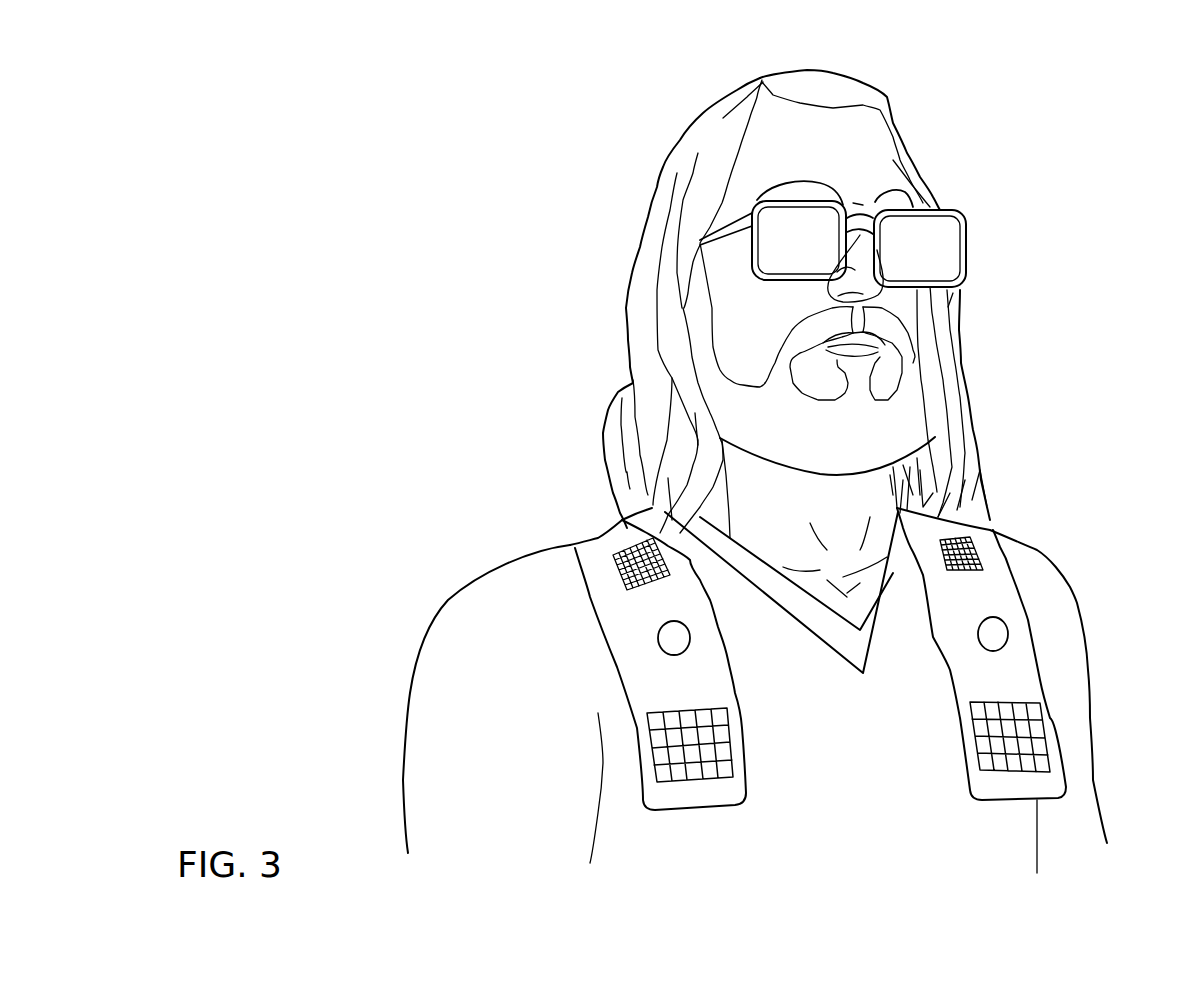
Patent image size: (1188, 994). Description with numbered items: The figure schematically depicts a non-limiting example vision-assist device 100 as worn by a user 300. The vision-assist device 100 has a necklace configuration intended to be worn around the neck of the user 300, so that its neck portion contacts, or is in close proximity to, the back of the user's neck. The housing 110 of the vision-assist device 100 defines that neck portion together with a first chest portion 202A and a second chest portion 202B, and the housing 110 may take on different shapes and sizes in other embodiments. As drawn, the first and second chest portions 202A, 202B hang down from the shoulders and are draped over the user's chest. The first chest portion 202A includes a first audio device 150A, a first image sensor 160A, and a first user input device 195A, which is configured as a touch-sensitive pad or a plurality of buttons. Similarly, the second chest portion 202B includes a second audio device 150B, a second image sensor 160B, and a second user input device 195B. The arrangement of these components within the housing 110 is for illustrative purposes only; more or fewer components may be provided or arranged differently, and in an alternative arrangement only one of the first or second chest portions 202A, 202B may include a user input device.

The user 300 is at (1003, 187).
The vision-assist device 100 is at (1028, 571).
The housing 110 is at (1057, 675).
The first chest portion 202A is at (715, 680).
The second chest portion 202B is at (960, 677).
The first audio device 150A is at (620, 550).
The second audio device 150B is at (968, 540).
The first image sensor 160A is at (663, 639).
The second image sensor 160B is at (1010, 633).
The first user input device 195A is at (733, 747).
The second user input device 195B is at (973, 738).